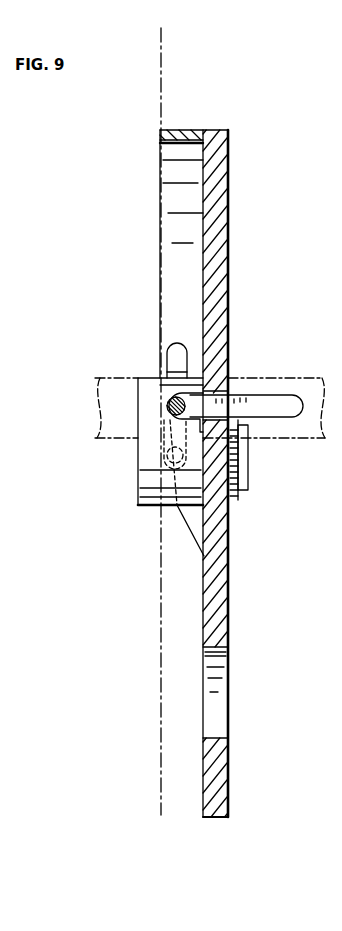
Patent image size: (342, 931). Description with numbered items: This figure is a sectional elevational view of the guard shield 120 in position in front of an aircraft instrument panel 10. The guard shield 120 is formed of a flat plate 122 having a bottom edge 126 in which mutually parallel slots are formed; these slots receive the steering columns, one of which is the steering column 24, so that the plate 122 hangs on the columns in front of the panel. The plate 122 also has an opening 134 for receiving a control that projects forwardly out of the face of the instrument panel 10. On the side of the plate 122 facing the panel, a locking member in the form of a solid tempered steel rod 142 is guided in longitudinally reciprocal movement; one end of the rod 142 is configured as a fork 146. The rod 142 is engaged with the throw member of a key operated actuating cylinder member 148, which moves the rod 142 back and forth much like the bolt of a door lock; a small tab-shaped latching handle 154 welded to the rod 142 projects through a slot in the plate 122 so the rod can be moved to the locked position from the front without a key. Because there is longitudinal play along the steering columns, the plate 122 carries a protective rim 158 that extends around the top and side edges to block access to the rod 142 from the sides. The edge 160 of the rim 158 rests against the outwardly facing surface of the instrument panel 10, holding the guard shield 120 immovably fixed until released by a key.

The instrument panel 10 is at (163, 82).
The steering column 24 is at (268, 372).
The guard shield 120 is at (238, 160).
The plate 122 is at (228, 590).
The bottom edge 126 is at (212, 818).
The opening 134 is at (218, 738).
The tempered steel rod 142 is at (165, 399).
The fork 146 is at (176, 338).
The key operated actuating cylinder member 148 is at (238, 498).
The latching handle 154 is at (292, 393).
The protective rim 158 is at (176, 146).
The edge 160 is at (160, 199).